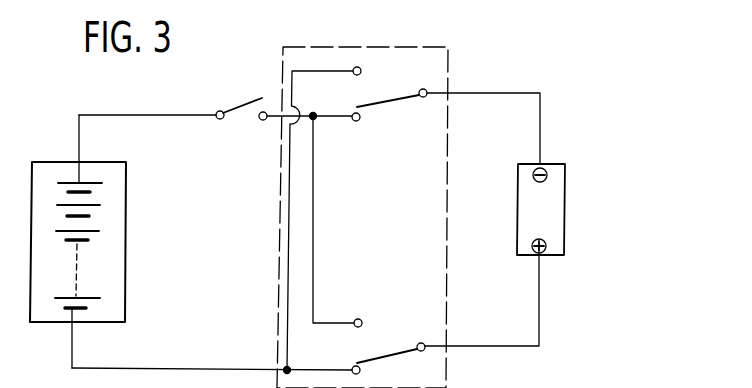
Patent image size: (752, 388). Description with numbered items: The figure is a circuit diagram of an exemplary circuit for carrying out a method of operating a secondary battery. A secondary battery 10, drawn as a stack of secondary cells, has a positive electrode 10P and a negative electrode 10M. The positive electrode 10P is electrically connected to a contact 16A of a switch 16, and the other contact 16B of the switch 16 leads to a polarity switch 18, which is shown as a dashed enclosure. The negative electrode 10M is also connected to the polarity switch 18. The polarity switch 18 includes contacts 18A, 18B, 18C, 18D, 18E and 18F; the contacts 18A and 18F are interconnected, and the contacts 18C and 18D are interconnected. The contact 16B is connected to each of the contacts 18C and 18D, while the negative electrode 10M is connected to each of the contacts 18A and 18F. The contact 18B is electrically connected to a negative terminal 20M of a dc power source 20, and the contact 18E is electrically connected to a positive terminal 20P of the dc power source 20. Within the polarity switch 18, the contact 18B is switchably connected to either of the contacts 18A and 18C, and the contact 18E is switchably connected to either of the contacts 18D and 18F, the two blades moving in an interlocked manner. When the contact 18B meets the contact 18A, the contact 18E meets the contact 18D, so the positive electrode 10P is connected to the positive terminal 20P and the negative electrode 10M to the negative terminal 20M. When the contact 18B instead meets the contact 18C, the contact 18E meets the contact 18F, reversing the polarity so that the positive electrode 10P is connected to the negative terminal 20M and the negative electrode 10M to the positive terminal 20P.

The secondary battery 10 is at (126, 260).
The positive electrode 10P is at (72, 182).
The negative electrode 10M is at (67, 313).
The switch 16 is at (233, 119).
The contact 16A is at (216, 118).
The contact 16B is at (263, 121).
The polarity switch 18 is at (454, 86).
The contact 18A is at (361, 69).
The contact 18B is at (423, 97).
The contact 18C is at (355, 122).
The contact 18D is at (358, 318).
The contact 18E is at (420, 343).
The contact 18F is at (360, 373).
The dc power source 20 is at (564, 225).
The negative terminal 20M is at (538, 163).
The positive terminal 20P is at (537, 257).